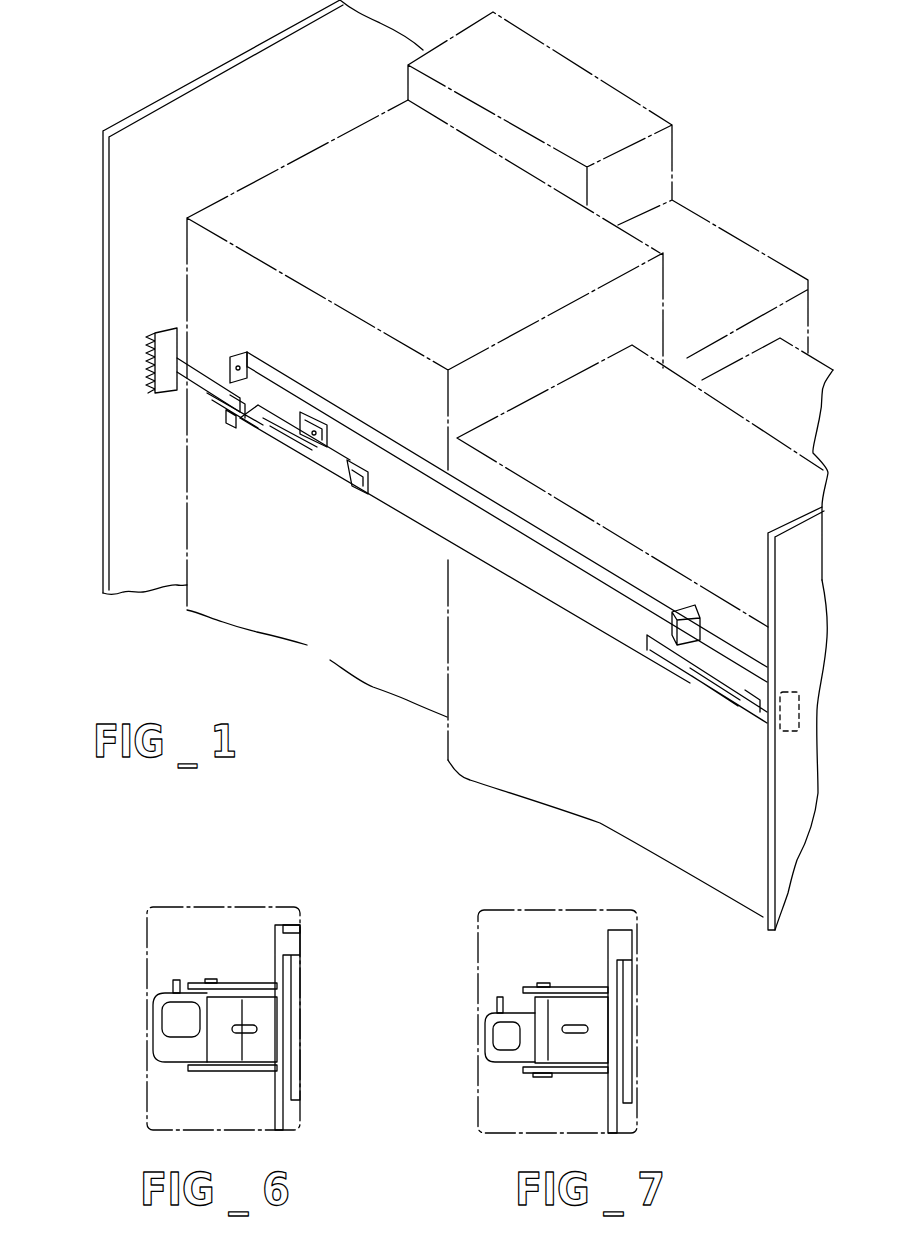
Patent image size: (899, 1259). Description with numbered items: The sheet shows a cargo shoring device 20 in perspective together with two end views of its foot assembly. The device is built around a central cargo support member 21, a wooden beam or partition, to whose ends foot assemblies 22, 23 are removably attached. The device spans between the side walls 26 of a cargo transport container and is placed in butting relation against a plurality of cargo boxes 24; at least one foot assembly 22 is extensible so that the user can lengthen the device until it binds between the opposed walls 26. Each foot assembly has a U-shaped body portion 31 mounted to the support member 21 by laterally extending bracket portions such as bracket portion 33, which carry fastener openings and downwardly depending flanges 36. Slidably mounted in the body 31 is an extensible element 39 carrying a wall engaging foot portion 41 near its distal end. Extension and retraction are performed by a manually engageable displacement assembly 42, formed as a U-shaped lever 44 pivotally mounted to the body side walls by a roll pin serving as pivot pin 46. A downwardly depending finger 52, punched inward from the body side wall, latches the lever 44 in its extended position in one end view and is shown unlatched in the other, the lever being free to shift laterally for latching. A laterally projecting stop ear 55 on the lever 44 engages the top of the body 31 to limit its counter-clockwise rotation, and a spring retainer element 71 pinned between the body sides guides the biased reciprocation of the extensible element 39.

In FIG. 1, the cargo shoring device 20 is at (432, 541).
In FIG. 1, the central cargo support member 21 is at (540, 600).
In FIG. 1, the foot assembly 22 is at (285, 466).
In FIG. 1, the foot assembly 23 is at (710, 713).
In FIG. 1, the cargo boxes 24 is at (487, 117).
In FIG. 1, the side walls 26 is at (178, 110).
In FIG. 1, the body portion 31 is at (267, 403).
In FIG. 6, the body portion 31 is at (253, 1073).
In FIG. 7, the body portion 31 is at (582, 987).
In FIG. 7, the bracket portion 33 is at (613, 967).
In FIG. 1, the downwardly depending flanges 36 is at (237, 352).
In FIG. 6, the downwardly depending flanges 36 is at (293, 920).
In FIG. 1, the extensible element 39 is at (195, 365).
In FIG. 6, the extensible element 39 is at (262, 1000).
In FIG. 1, the wall engaging foot portion 41 is at (158, 321).
In FIG. 6, the wall engaging foot portion 41 is at (146, 938).
In FIG. 1, the displacement assembly 42 is at (363, 460).
In FIG. 6, the displacement assembly 42 is at (159, 1064).
In FIG. 7, the displacement assembly 42 is at (499, 1067).
In FIG. 6, the lever 44 is at (170, 1047).
In FIG. 7, the lever 44 is at (483, 1037).
In FIG. 6, the pivot pin 46 is at (213, 1073).
In FIG. 7, the pivot pin 46 is at (540, 983).
In FIG. 6, the finger 52 is at (235, 1007).
In FIG. 7, the finger 52 is at (523, 990).
In FIG. 6, the stop ear 55 is at (177, 981).
In FIG. 7, the stop ear 55 is at (497, 1003).
In FIG. 6, the spring retainer element 71 is at (233, 1040).
In FIG. 7, the spring retainer element 71 is at (563, 1045).